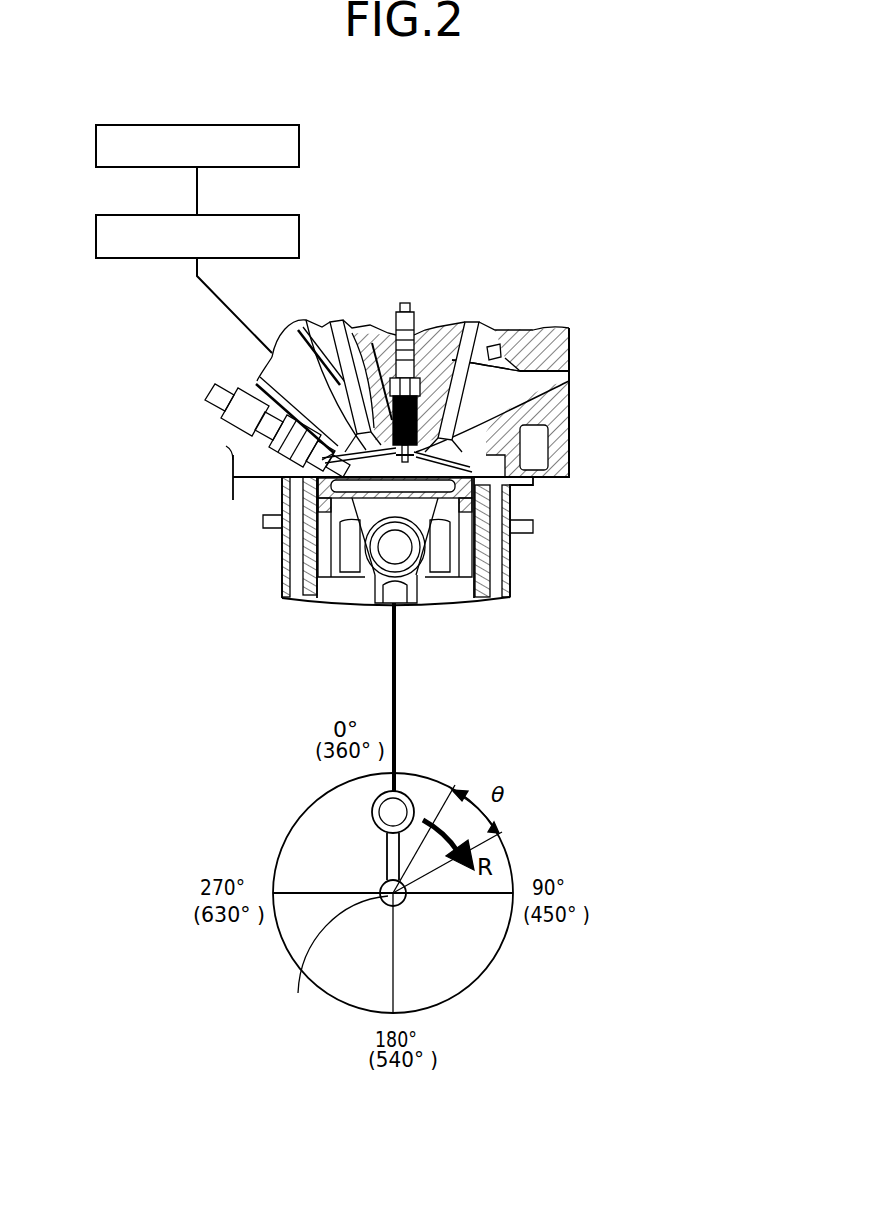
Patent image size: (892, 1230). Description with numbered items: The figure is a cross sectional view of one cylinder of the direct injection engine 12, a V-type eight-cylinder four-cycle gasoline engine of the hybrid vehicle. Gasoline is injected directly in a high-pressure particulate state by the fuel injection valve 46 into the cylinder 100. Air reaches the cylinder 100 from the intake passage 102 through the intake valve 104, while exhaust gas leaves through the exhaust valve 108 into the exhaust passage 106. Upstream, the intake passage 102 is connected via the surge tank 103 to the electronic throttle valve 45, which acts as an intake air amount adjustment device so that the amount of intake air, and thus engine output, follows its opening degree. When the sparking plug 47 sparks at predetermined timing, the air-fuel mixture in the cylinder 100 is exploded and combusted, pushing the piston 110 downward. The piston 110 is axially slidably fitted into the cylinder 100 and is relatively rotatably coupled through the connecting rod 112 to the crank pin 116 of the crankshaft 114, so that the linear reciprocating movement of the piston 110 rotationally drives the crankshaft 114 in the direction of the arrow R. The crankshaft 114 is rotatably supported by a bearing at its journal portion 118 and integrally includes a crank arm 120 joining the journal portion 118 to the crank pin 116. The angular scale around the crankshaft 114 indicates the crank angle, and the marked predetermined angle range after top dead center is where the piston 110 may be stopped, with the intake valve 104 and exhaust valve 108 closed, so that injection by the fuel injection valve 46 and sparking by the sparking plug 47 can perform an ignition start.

The direct injection engine 12 is at (591, 281).
The electronic throttle valve 45 is at (271, 131).
The fuel injection valve 46 is at (240, 415).
The sparking plug 47 is at (433, 325).
The cylinder 100 is at (485, 557).
The intake passage 102 is at (290, 378).
The surge tank 103 is at (248, 217).
The intake valve 104 is at (303, 335).
The exhaust passage 106 is at (519, 392).
The exhaust valve 108 is at (545, 412).
The piston 110 is at (350, 503).
The connecting rod 112 is at (397, 689).
The crankshaft 114 is at (411, 915).
The crank pin 116 is at (377, 810).
The journal portion 118 is at (332, 962).
The crank arm 120 is at (392, 860).